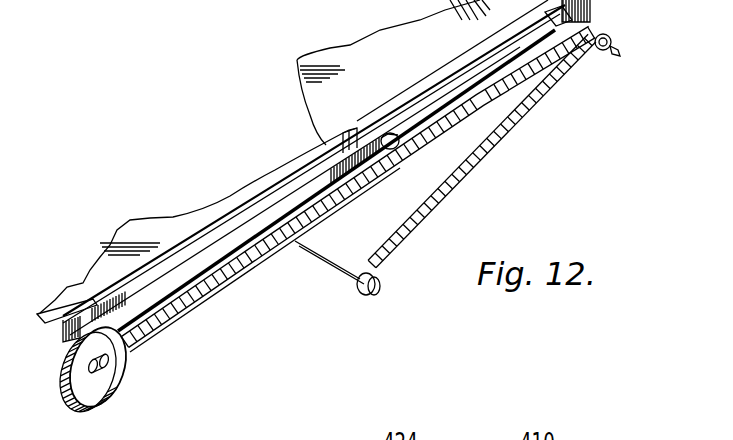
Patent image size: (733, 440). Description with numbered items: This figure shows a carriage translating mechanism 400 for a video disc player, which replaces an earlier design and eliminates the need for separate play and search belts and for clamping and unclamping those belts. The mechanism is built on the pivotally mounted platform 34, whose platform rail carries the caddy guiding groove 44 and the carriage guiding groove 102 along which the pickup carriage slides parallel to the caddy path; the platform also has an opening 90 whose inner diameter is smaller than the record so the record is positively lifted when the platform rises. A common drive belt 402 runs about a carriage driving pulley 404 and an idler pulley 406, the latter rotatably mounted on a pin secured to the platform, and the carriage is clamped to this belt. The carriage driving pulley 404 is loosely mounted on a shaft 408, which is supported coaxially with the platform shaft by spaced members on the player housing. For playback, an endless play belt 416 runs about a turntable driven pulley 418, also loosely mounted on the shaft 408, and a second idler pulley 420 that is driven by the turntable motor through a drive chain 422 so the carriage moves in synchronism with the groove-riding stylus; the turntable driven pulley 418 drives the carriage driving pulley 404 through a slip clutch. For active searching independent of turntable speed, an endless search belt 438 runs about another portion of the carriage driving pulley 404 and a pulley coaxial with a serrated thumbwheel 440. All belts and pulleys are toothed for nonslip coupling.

The platform 34 is at (161, 224).
The caddy guiding groove 44 is at (48, 338).
The opening 90 is at (270, 177).
The carriage guiding groove 102 is at (340, 140).
The carriage translating mechanism 400 is at (620, 148).
The common drive belt 402 is at (462, 86).
The carriage driving pulley 404 is at (592, 14).
The idler pulley 406 is at (385, 133).
The shaft 408 is at (620, 55).
The endless play belt 416 is at (497, 158).
The turntable driven pulley 418 is at (618, 38).
The idler pulley 420 is at (380, 284).
The drive chain 422 is at (323, 258).
The endless search belt 438 is at (207, 303).
The serrated thumbwheel 440 is at (110, 372).